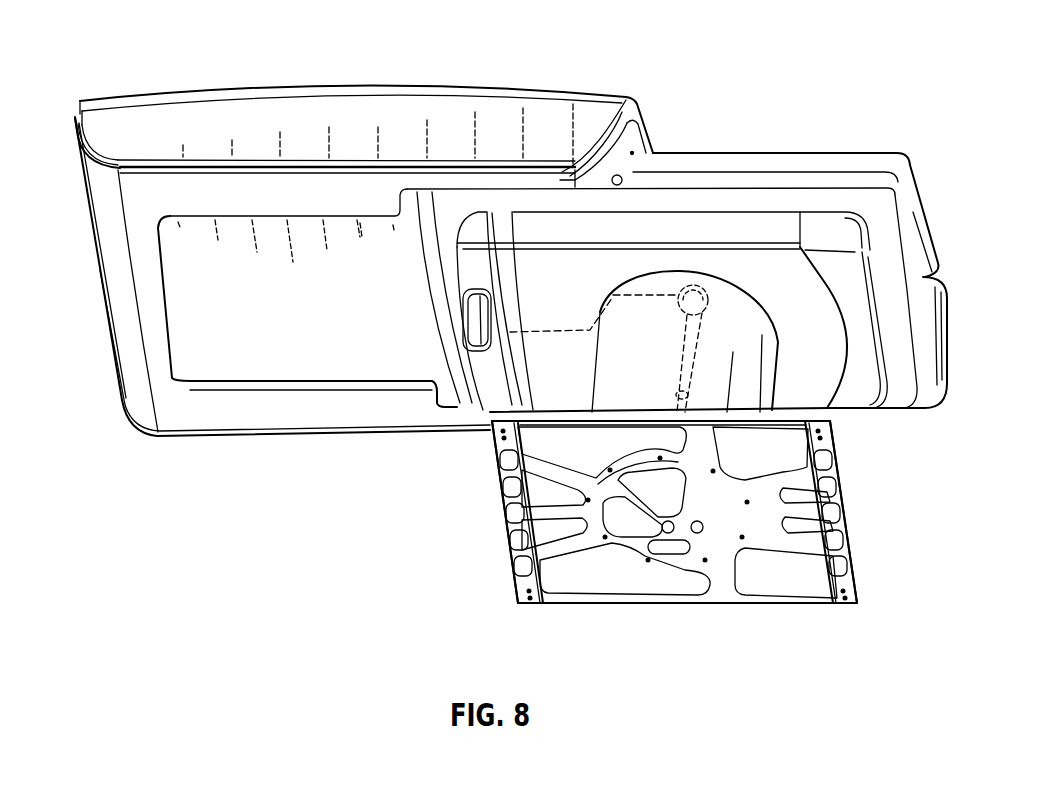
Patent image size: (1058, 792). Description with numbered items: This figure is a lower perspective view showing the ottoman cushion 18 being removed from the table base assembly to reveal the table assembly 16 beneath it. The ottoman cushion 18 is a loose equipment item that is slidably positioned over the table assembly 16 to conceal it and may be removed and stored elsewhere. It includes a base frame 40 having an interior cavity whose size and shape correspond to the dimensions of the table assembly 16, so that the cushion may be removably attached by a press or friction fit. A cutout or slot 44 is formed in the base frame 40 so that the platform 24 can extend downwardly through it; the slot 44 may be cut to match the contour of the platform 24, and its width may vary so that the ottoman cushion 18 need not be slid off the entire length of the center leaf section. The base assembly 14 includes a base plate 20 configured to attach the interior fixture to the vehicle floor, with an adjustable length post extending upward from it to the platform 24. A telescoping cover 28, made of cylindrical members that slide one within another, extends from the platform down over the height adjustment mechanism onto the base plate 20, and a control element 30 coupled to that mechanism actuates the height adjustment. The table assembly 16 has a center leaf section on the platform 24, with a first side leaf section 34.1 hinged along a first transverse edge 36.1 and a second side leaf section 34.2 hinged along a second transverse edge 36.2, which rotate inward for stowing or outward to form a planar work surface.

The base assembly 14 is at (870, 515).
The table assembly 16 is at (772, 97).
The ottoman cushion 18 is at (171, 43).
The base plate 20 is at (858, 592).
The platform 24 is at (860, 403).
The telescoping cover 28 is at (743, 301).
The control element 30 is at (478, 342).
The first side leaf section 34.1 is at (920, 204).
The second side leaf section 34.2 is at (943, 307).
The first transverse edge 36.1 is at (852, 181).
The second transverse edge 36.2 is at (905, 414).
The base frame 40 is at (142, 208).
The slot 44 is at (262, 388).